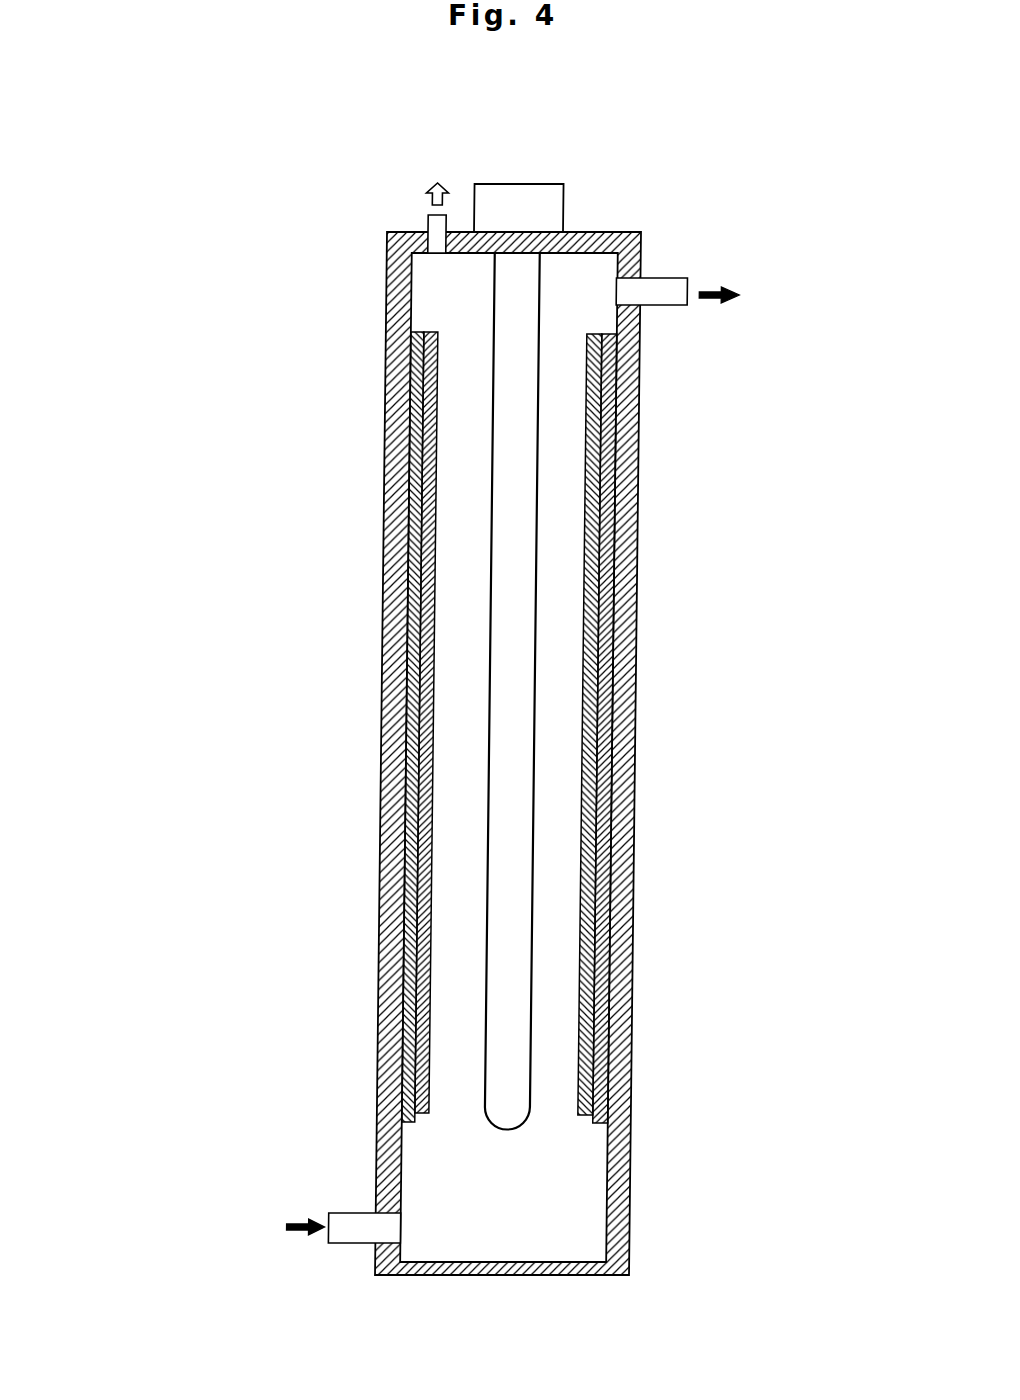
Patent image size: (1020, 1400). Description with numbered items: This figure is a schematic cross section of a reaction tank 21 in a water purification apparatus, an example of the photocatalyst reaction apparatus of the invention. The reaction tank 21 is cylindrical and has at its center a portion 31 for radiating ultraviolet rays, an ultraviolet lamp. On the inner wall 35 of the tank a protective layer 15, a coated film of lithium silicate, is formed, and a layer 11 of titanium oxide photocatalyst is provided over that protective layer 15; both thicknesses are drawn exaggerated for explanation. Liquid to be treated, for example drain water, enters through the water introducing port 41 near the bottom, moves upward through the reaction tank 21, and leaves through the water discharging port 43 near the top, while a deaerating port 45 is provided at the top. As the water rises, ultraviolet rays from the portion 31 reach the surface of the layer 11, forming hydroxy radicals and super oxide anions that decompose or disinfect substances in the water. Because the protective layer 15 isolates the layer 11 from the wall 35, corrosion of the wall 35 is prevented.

The layer of a photocatalyst 11 is at (585, 338).
The protective layer 15 is at (418, 325).
The reaction tank 21 is at (267, 385).
The portion for radiating ultraviolet rays 31 is at (535, 862).
The wall 35 is at (382, 488).
The water introducing port 41 is at (340, 1245).
The water discharging port 43 is at (668, 278).
The deaerating port 45 is at (425, 220).